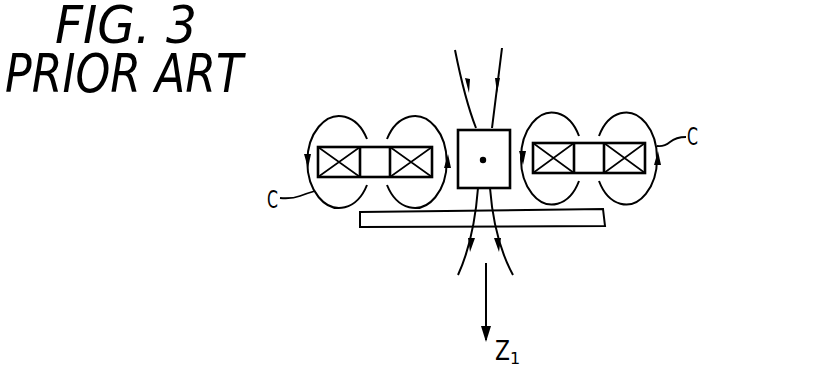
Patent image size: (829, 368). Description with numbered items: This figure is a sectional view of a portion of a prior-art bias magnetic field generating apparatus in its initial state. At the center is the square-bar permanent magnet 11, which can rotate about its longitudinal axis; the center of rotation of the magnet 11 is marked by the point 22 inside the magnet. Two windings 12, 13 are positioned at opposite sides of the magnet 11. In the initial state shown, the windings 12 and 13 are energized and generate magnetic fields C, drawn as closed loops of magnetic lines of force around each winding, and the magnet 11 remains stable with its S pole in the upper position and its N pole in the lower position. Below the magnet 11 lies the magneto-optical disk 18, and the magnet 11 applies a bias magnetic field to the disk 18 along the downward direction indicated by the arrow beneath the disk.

The square-bar permanent magnet 11 is at (508, 130).
The center of rotation of the magnet 22 is at (482, 159).
The winding 12 is at (335, 178).
The winding 13 is at (627, 147).
The magneto-optical disk 18 is at (590, 220).